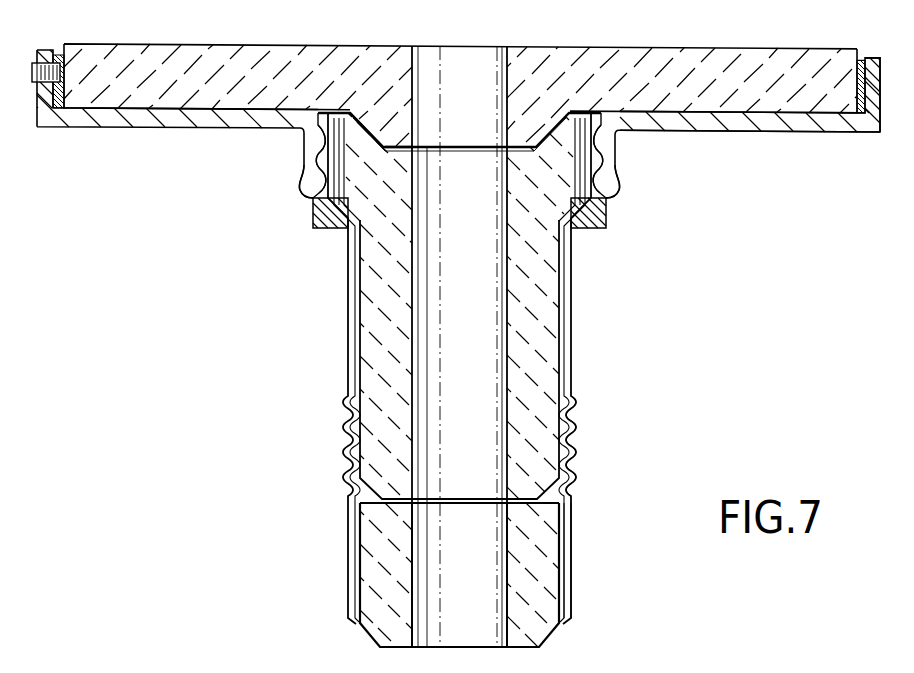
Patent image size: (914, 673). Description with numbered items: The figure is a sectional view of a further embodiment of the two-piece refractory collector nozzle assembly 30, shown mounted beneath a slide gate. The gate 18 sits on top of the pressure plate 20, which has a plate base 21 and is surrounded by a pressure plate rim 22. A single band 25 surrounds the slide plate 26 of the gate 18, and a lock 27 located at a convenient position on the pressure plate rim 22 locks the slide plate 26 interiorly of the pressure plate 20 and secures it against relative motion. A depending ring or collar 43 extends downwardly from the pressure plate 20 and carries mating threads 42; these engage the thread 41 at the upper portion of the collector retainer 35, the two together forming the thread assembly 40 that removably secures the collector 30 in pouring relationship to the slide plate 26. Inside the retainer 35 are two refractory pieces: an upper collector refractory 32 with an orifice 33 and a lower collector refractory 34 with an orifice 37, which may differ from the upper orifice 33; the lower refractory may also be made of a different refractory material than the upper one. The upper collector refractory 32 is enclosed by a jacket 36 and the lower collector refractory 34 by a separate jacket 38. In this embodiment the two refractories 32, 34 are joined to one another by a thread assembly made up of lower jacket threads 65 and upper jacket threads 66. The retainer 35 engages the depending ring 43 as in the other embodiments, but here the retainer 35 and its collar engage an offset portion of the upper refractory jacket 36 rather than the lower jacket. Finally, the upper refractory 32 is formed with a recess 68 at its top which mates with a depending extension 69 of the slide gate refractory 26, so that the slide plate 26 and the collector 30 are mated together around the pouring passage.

The gate 18 is at (658, 45).
The pressure plate 20 is at (890, 115).
The plate base 21 is at (797, 133).
The pressure plate rim 22 is at (887, 58).
The band 25 is at (58, 58).
The slide plate 26 is at (187, 84).
The lock 27 is at (30, 72).
The collector 30 is at (592, 265).
The upper collector refractory 32 is at (548, 271).
The orifice 33 is at (467, 271).
The lower collector refractory 34 is at (545, 562).
The collector retainer 35 is at (607, 215).
The jacket 36 is at (575, 313).
The orifice 37 is at (465, 562).
The jacket 38 is at (572, 566).
The thread assembly 40 is at (606, 180).
The thread 41 is at (607, 198).
The mating threads 42 is at (604, 146).
The depending ring 43 is at (612, 168).
The lower jacket threads 65 is at (578, 448).
The upper jacket threads 66 is at (575, 433).
The recess 68 is at (368, 135).
The depending extension 69 is at (403, 130).